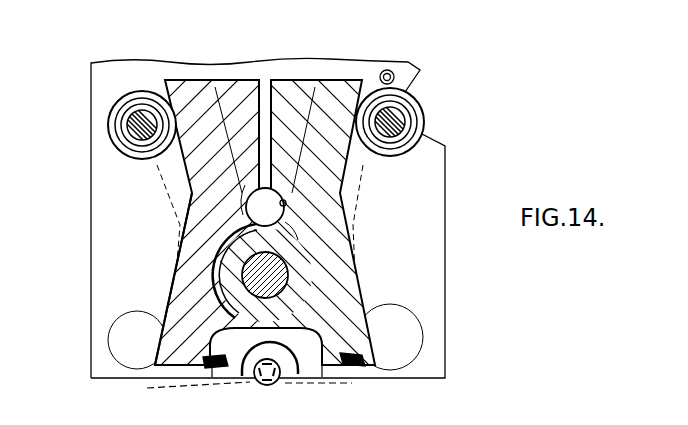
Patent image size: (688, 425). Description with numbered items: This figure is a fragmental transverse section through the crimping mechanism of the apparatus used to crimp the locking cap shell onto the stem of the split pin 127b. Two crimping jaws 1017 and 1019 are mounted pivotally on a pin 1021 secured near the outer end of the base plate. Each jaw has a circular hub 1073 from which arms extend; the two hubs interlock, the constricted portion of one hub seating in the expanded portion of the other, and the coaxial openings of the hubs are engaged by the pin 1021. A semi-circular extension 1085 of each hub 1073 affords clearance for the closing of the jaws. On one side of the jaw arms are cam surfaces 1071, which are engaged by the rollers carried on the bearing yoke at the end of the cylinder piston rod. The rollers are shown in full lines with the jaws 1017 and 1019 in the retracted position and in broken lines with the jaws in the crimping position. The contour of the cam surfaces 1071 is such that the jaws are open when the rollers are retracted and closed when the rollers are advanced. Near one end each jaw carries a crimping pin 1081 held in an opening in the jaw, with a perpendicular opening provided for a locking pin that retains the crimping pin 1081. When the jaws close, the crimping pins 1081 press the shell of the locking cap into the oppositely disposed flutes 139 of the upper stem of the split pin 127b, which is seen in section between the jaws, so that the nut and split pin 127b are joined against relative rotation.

The crimping jaw 1019 is at (357, 73).
The semi-circular extension 1085 is at (286, 203).
The cam surface 1071 is at (177, 274).
The pin 1021 is at (283, 268).
The crimping jaw 1017 is at (138, 392).
The crimping pin 1081 is at (212, 374).
The circular hub 1073 is at (243, 367).
The flutes 139 is at (262, 396).
The split pin 127b is at (280, 387).